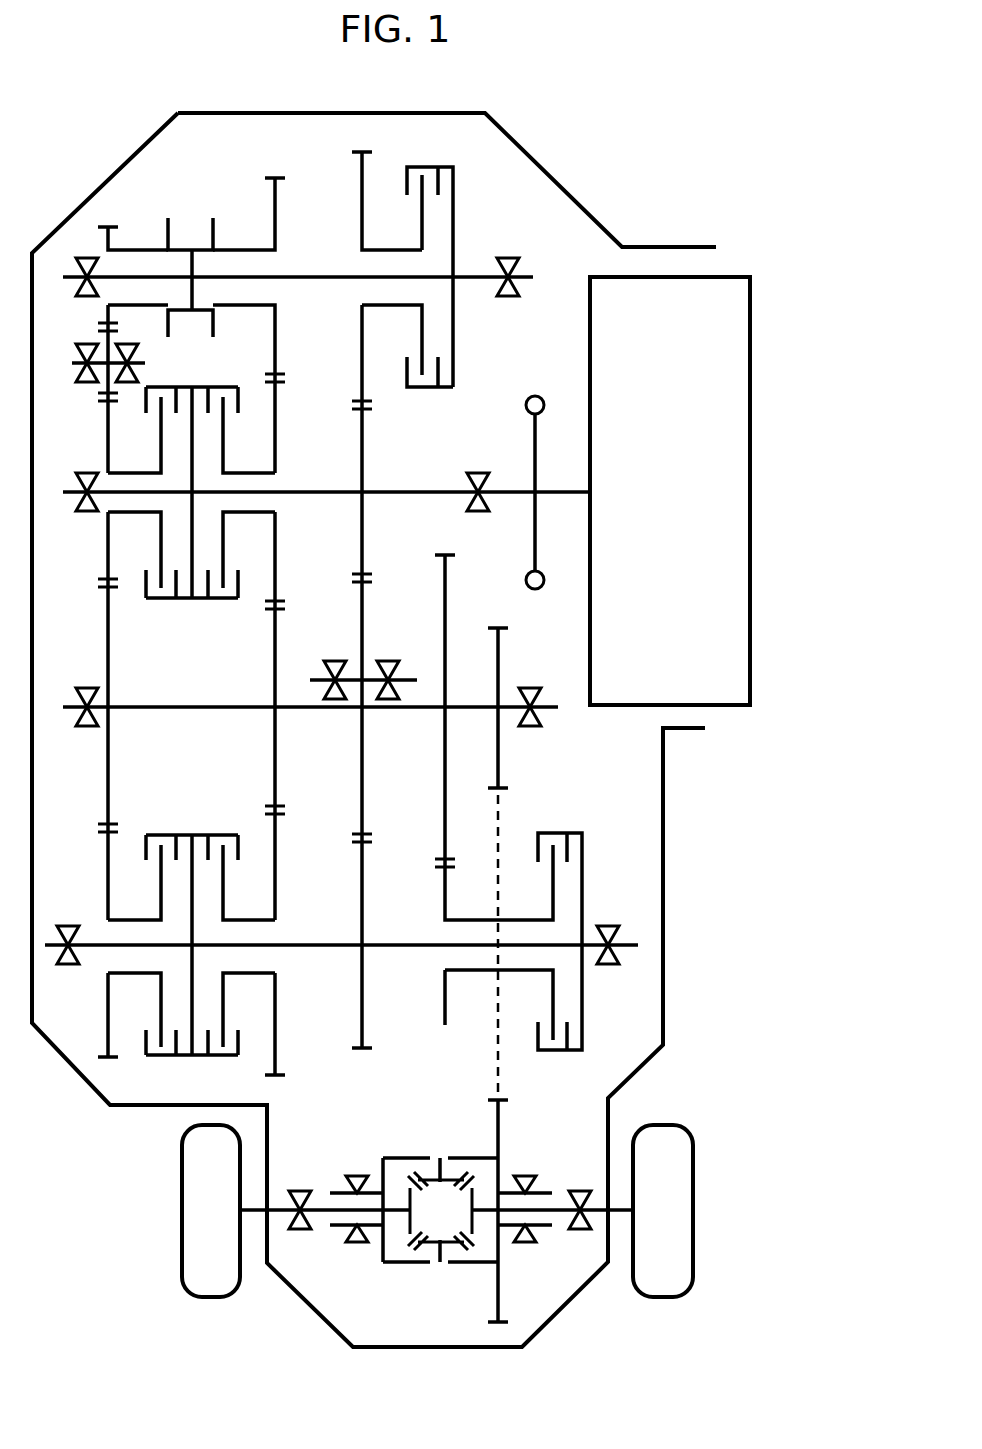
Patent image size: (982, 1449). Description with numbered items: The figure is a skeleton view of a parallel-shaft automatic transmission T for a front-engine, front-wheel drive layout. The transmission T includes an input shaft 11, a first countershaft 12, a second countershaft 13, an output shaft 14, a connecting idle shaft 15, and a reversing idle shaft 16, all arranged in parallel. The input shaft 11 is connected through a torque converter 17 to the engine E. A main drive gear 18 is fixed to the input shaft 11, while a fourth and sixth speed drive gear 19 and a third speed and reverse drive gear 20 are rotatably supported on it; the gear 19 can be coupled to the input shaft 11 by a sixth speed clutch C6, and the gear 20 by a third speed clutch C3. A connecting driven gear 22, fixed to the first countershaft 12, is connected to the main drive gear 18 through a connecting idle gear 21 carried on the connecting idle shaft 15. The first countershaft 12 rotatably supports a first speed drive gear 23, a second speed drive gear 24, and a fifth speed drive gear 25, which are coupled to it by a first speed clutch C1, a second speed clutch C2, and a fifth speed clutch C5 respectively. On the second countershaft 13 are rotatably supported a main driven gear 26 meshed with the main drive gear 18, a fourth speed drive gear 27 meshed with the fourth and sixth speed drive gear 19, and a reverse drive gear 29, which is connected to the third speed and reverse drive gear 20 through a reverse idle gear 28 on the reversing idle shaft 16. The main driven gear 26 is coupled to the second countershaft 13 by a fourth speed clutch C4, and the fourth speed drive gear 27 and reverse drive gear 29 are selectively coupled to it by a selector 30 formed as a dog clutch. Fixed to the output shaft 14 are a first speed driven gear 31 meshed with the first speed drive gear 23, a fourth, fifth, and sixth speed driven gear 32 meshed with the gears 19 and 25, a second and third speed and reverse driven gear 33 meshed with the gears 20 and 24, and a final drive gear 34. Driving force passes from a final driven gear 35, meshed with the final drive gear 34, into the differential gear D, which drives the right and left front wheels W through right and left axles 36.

The parallel-shaft automatic transmission T is at (504, 195).
The engine E is at (661, 505).
The front wheels W is at (185, 1205).
The differential gear D is at (414, 1144).
The input shaft 11 is at (383, 490).
The first countershaft 12 is at (370, 943).
The second countershaft 13 is at (340, 275).
The output shaft 14 is at (468, 706).
The connecting idle shaft 15 is at (368, 678).
The reversing idle shaft 16 is at (97, 326).
The torque converter 17 is at (540, 447).
The main drive gear 18 is at (352, 405).
The fourth and sixth speed drive gear 19 is at (285, 376).
The third speed and reverse drive gear 20 is at (98, 397).
The connecting idle gear 21 is at (372, 580).
The connecting driven gear 22 is at (372, 838).
The first speed drive gear 23 is at (455, 865).
The second speed drive gear 24 is at (98, 830).
The fifth speed drive gear 25 is at (285, 810).
The main driven gear 26 is at (366, 150).
The fourth speed drive gear 27 is at (268, 175).
The reverse idle gear 28 is at (95, 338).
The reverse drive gear 29 is at (112, 224).
The selector 30 is at (182, 240).
The first speed driven gear 31 is at (450, 555).
The fourth, fifth, and sixth speed driven gear 32 is at (285, 605).
The second and third speed and reverse driven gear 33 is at (98, 585).
The final drive gear 34 is at (503, 628).
The final driven gear 35 is at (495, 1098).
The axles 36 is at (318, 1205).
The first speed clutch C1 is at (560, 822).
The second speed clutch C2 is at (172, 828).
The third speed clutch C3 is at (165, 607).
The fourth speed clutch C4 is at (427, 158).
The fifth speed clutch C5 is at (213, 828).
The sixth speed clutch C6 is at (210, 607).